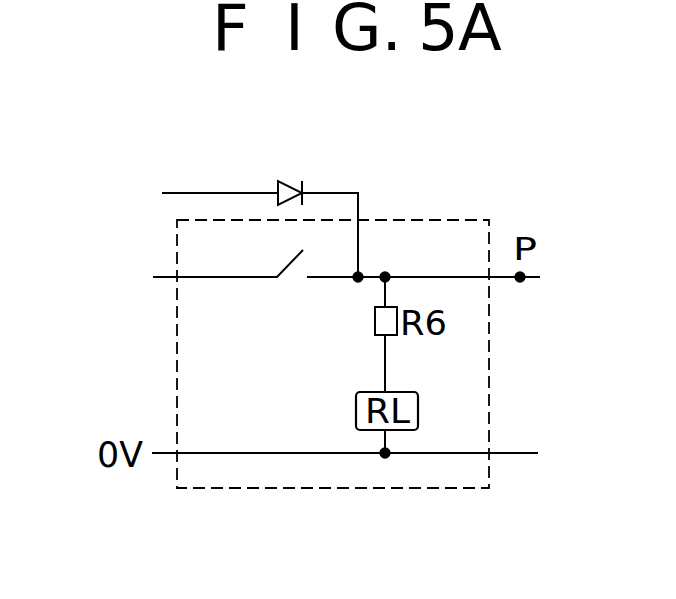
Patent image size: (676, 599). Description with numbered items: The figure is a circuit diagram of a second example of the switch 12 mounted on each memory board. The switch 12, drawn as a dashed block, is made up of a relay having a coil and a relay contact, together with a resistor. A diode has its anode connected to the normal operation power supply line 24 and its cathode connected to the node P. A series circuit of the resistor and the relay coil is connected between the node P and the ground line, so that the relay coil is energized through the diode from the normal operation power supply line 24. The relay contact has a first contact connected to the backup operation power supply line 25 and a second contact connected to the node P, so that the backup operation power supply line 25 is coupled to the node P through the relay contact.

The switch 12 is at (372, 488).
The normal operation power supply line 24 is at (194, 193).
The backup operation power supply line 25 is at (158, 277).